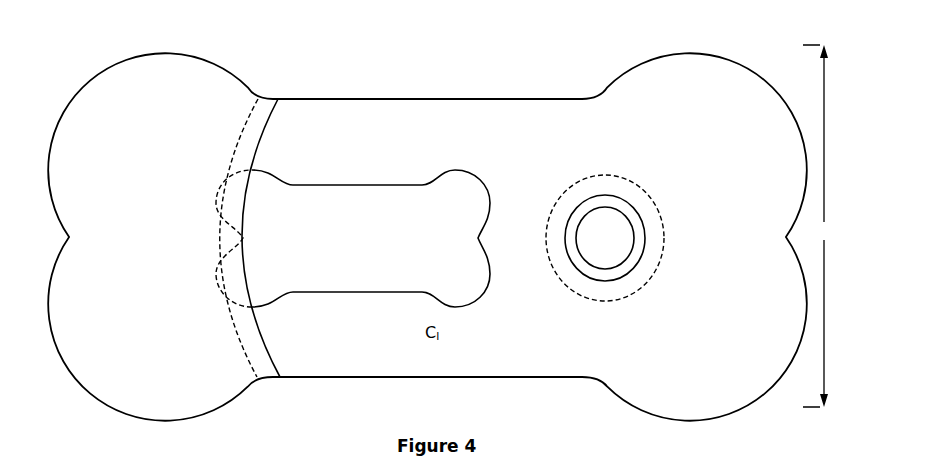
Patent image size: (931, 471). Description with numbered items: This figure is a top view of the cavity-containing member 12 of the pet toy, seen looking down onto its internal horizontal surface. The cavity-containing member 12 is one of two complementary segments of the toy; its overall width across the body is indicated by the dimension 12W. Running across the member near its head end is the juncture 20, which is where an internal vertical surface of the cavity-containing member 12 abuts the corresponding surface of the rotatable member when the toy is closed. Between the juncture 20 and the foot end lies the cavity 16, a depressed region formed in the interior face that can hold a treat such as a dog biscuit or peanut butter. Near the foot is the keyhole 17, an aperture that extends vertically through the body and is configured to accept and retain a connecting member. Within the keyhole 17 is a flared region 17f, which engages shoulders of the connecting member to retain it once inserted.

The cavity-containing member 12 is at (427, 236).
The width of body 12W is at (818, 226).
The cavity 16 is at (353, 238).
The keyhole 17 is at (605, 238).
The flared region 17f is at (607, 233).
The juncture 20 is at (265, 122).